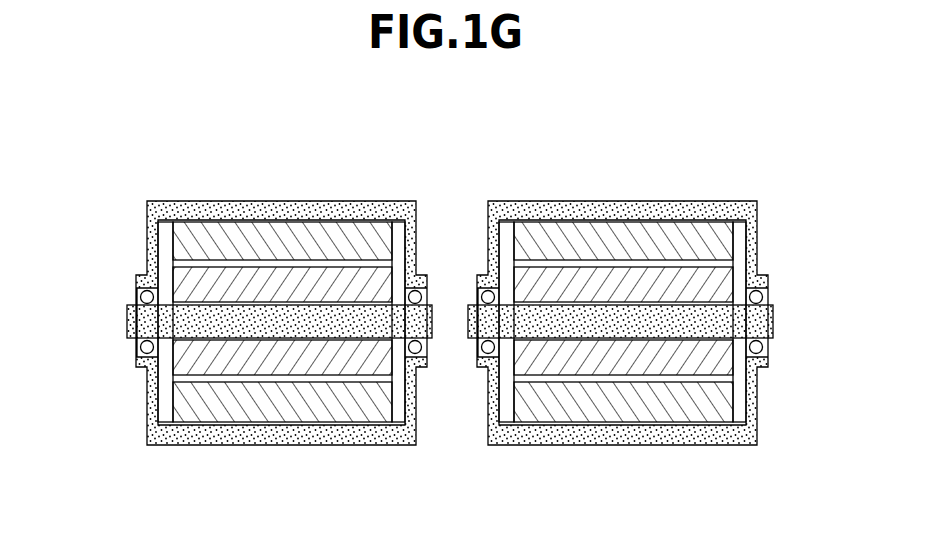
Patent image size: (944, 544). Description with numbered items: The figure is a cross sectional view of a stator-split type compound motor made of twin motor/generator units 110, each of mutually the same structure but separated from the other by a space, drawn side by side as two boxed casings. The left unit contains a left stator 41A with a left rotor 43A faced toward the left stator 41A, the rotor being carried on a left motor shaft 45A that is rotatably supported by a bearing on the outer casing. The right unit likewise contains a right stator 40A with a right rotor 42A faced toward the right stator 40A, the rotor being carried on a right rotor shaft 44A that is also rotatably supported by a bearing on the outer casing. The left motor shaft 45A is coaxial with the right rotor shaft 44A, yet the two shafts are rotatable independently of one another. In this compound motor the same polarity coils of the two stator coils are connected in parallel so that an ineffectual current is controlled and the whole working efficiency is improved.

The motor/generator unit 110 is at (316, 176).
The right stator 40A is at (747, 236).
The left stator 41A is at (173, 240).
The right rotor 42A is at (747, 281).
The left rotor 43A is at (170, 286).
The right rotor shaft 44A is at (760, 318).
The left motor shaft 45A is at (150, 325).